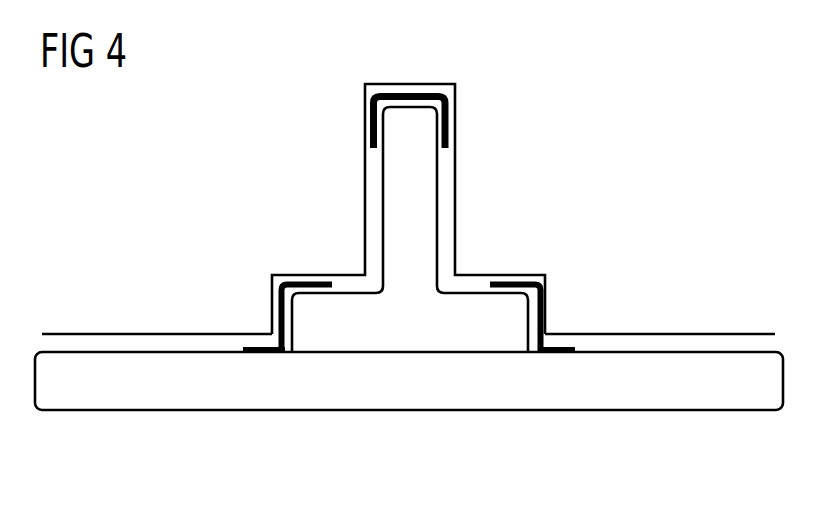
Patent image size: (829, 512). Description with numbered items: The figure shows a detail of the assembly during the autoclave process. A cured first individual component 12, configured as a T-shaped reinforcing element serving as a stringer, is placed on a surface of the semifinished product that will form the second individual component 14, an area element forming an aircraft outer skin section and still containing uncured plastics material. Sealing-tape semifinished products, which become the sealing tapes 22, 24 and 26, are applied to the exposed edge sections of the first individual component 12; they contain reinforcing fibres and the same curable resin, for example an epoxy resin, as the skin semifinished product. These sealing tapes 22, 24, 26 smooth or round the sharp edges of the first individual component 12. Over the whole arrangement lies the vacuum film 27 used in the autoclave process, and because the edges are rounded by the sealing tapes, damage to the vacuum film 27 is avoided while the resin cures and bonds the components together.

The first individual component 12 is at (427, 183).
The second individual component 14 is at (708, 397).
The sealing tape 22 is at (272, 309).
The sealing tape 24 is at (544, 303).
The sealing tape 26 is at (409, 90).
The vacuum film 27 is at (513, 273).